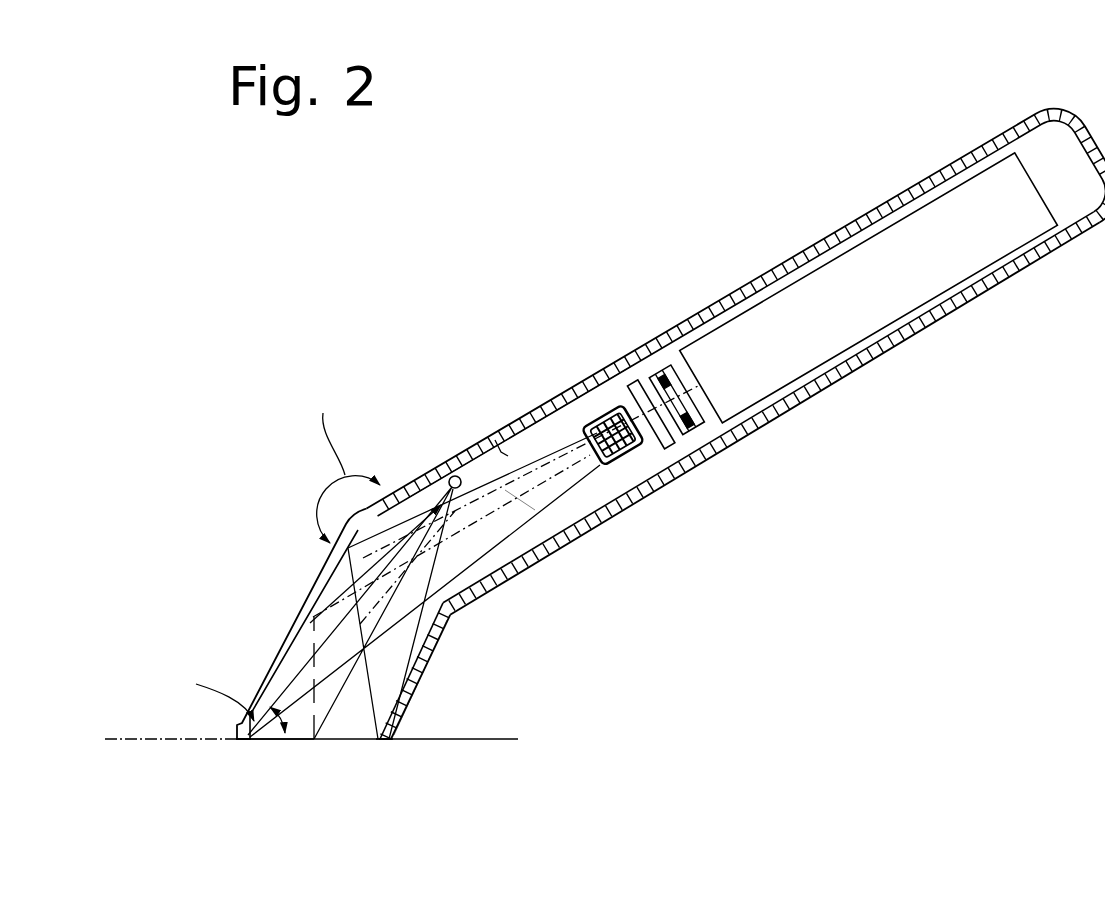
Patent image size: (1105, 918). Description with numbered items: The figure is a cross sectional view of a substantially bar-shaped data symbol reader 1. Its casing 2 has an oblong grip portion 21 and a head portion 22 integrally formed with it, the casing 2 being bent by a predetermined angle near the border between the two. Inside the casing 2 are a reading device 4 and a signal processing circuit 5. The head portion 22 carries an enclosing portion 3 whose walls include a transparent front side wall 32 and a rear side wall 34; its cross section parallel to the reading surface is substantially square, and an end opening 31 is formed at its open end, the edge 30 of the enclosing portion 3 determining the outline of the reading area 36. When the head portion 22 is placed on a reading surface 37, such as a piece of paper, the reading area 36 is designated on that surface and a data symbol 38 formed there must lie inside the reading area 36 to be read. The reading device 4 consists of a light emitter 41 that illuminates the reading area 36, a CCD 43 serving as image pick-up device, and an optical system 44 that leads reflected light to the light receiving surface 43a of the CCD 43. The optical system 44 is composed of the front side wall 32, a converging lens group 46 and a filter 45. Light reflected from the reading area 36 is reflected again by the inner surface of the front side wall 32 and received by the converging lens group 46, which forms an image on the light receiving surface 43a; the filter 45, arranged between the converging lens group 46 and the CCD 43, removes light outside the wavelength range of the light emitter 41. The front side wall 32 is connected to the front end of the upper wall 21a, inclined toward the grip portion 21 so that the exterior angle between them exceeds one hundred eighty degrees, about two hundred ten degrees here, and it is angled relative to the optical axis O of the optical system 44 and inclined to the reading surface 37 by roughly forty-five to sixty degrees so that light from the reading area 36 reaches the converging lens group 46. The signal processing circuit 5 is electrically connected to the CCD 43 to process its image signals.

The data symbol reader 1 is at (565, 124).
The casing 2 is at (826, 200).
The grip portion 21 is at (748, 274).
The upper wall 21a is at (680, 322).
The enclosing portion 3 is at (418, 675).
The rear side wall 34 is at (420, 688).
The head portion 22 is at (287, 641).
The front side wall 32 is at (337, 548).
The edge 30 is at (238, 742).
The end opening 31 is at (358, 742).
The reading area 36 is at (270, 742).
The reading surface 37 is at (483, 742).
The data symbol 38 is at (323, 742).
The light emitter 41 is at (455, 474).
The reading device 4 is at (593, 496).
The optical system 44 is at (612, 389).
The converging lens group 46 is at (597, 417).
The CCD 43 is at (687, 423).
The light receiving surface 43a is at (697, 432).
The filter 45 is at (670, 424).
The signal processing circuit 5 is at (978, 215).
The optical axis O is at (521, 500).